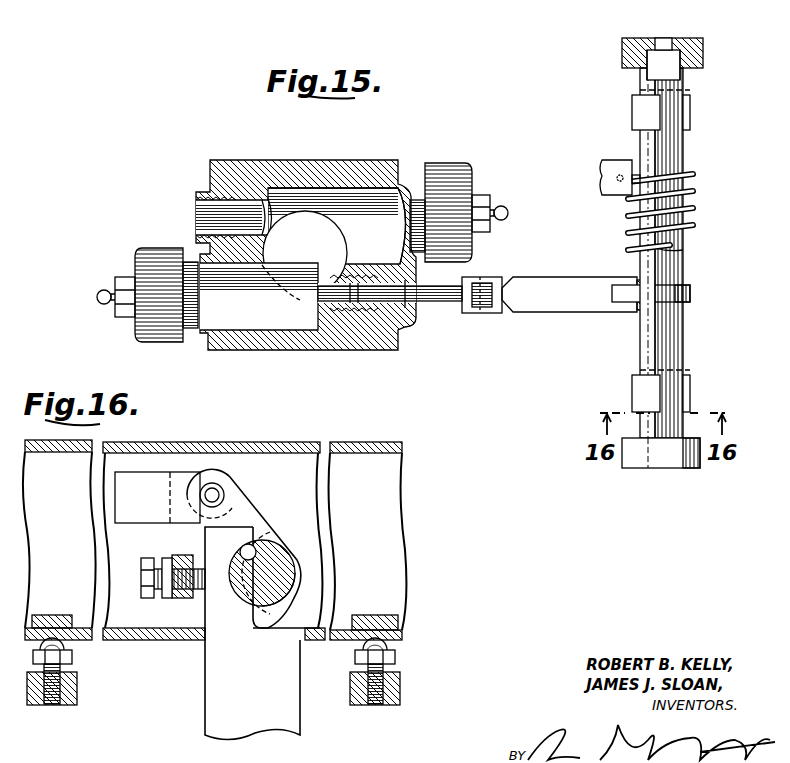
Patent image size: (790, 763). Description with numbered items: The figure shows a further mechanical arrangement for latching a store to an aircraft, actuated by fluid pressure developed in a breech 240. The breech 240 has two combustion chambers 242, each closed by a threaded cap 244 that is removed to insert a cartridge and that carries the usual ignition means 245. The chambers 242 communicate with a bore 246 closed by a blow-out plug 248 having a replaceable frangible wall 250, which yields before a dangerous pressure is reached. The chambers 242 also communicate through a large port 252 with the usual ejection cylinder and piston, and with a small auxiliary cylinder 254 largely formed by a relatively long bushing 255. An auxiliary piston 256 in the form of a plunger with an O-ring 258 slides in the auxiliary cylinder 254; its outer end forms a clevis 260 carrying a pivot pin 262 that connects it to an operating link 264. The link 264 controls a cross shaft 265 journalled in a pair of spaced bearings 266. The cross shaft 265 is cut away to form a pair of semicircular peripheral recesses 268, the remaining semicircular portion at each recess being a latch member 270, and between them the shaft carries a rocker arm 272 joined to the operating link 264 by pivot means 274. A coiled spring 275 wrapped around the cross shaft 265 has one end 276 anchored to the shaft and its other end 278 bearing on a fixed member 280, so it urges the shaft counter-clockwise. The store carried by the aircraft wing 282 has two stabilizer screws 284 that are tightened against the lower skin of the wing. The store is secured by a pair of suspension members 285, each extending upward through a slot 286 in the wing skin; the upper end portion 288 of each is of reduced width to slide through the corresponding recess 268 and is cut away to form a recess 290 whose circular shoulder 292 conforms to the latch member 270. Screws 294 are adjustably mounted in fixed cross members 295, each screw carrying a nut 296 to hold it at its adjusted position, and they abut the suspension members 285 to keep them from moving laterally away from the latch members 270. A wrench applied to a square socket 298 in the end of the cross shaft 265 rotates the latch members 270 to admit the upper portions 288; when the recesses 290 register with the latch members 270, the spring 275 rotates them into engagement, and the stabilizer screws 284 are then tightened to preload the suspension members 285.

In FIG. 15, the breech 240 is at (333, 160).
In FIG. 15, the combustion chamber 242 is at (363, 195).
In FIG. 15, the threaded cap 244 is at (445, 163).
In FIG. 15, the ignition means 245 is at (502, 207).
In FIG. 15, the bore 246 is at (288, 232).
In FIG. 15, the blow-out plug 248 is at (206, 195).
In FIG. 15, the frangible wall 250 is at (265, 198).
In FIG. 15, the large port 252 is at (303, 295).
In FIG. 15, the auxiliary cylinder 254 is at (338, 284).
In FIG. 15, the bushing 255 is at (418, 322).
In FIG. 15, the auxiliary piston 256 is at (455, 302).
In FIG. 15, the O-ring 258 is at (350, 258).
In FIG. 15, the clevis 260 is at (505, 277).
In FIG. 15, the pivot pin 262 is at (488, 313).
In FIG. 15, the operating link 264 is at (546, 277).
In FIG. 16, the operating link 264 is at (152, 472).
In FIG. 15, the cross shaft 265 is at (678, 332).
In FIG. 16, the cross shaft 265 is at (275, 592).
In FIG. 15, the bearing 266 is at (703, 55).
In FIG. 15, the semicircular peripheral recess 268 is at (640, 90).
In FIG. 16, the semicircular peripheral recess 268 is at (272, 627).
In FIG. 15, the latch member 270 is at (670, 105).
In FIG. 16, the latch member 270 is at (285, 560).
In FIG. 15, the rocker arm 272 is at (620, 297).
In FIG. 16, the rocker arm 272 is at (242, 490).
In FIG. 15, the pivot means 274 is at (640, 282).
In FIG. 16, the pivot means 274 is at (216, 490).
In FIG. 15, the coiled spring 275 is at (696, 217).
In FIG. 15, the spring end 276 is at (672, 252).
In FIG. 15, the spring end 278 is at (633, 160).
In FIG. 15, the fixed member 280 is at (603, 168).
In FIG. 16, the aircraft wing 282 is at (352, 436).
In FIG. 16, the stabilizer screw 284 is at (72, 654).
In FIG. 15, the suspension member 285 is at (690, 112).
In FIG. 16, the suspension member 285 is at (212, 730).
In FIG. 16, the slot 286 is at (200, 640).
In FIG. 15, the upper end portion 288 is at (632, 110).
In FIG. 16, the upper end portion 288 is at (205, 537).
In FIG. 16, the recess 290 is at (215, 568).
In FIG. 16, the shoulder 292 is at (260, 545).
In FIG. 16, the screw 294 is at (141, 585).
In FIG. 16, the fixed cross member 295 is at (185, 590).
In FIG. 16, the washer 296 is at (165, 596).
In FIG. 15, the square socket 298 is at (663, 38).